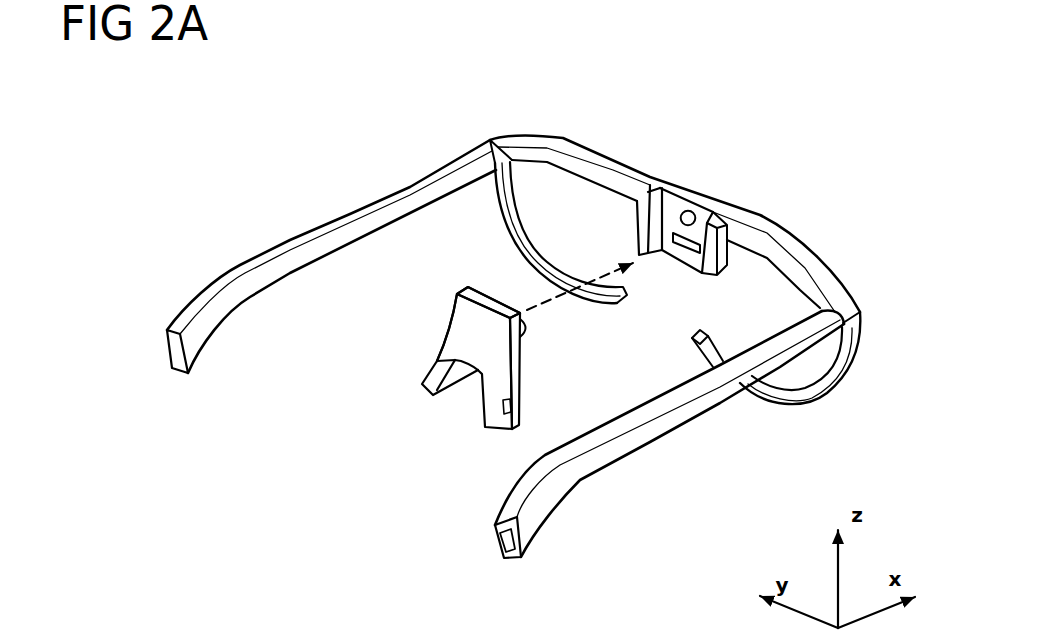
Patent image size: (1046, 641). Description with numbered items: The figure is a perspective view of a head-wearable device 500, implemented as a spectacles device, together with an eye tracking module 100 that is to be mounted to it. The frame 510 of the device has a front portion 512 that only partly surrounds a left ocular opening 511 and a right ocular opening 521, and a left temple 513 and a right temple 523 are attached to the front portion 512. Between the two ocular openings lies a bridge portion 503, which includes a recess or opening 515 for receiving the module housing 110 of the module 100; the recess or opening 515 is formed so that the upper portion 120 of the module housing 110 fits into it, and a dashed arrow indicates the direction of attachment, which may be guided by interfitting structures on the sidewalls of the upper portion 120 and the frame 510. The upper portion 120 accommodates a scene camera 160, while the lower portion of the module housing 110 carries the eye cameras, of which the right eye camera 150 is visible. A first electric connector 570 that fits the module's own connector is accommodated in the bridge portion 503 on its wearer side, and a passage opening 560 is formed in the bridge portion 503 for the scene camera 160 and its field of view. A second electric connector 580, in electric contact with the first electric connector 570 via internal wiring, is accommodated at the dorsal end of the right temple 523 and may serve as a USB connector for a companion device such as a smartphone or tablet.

The head-wearable device 500 is at (573, 108).
The frame 510 is at (800, 180).
The left ocular opening 511 is at (572, 236).
The front portion 512 is at (525, 135).
The left temple 513 is at (301, 218).
The recess or opening 515 is at (663, 188).
The bridge portion 503 is at (698, 183).
The passage opening 560 is at (690, 211).
The first electric connector 570 is at (678, 243).
The right ocular opening 521 is at (740, 312).
The right temple 523 is at (697, 430).
The second electric connector 580 is at (500, 542).
The eye tracking module 100 is at (432, 340).
The module housing 110 is at (457, 407).
The upper portion 120 is at (447, 318).
The right eye camera 150 is at (508, 412).
The scene camera 160 is at (532, 335).